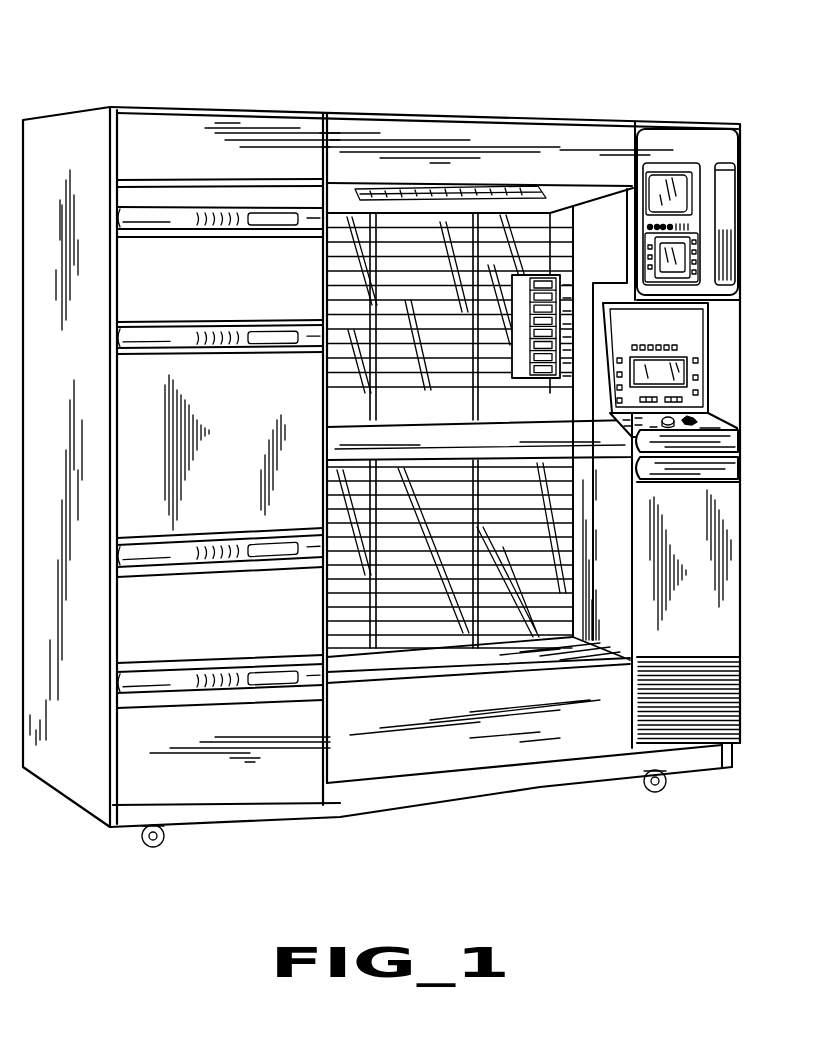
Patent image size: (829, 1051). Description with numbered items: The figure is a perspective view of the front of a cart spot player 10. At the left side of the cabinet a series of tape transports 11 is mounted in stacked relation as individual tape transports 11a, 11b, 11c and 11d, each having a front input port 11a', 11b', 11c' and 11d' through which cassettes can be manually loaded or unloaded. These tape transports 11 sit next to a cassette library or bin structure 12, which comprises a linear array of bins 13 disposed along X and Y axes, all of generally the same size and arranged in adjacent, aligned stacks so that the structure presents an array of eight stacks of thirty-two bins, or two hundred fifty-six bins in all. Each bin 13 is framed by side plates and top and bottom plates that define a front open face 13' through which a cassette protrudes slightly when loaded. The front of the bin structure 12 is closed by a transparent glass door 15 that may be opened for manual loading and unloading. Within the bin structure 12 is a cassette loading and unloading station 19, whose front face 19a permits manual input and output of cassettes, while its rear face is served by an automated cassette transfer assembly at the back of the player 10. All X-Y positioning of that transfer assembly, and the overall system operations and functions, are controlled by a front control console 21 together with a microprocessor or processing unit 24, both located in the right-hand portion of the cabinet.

The cart spot player 10 is at (212, 66).
The tape transports 11 is at (125, 375).
The tape transport 11a is at (220, 273).
The front input port 11a' is at (221, 237).
The tape transport 11b is at (225, 452).
The front input port 11b' is at (222, 354).
The tape transport 11c is at (229, 633).
The front input port 11c' is at (222, 568).
The tape transport 11d is at (240, 764).
The front input port 11d' is at (223, 691).
The bin structure 12 is at (523, 247).
The bins 13 is at (426, 316).
The front open face 13' is at (456, 525).
The transparent glass door 15 is at (417, 615).
The cassette loading and unloading station 19 is at (575, 277).
The front face 19a is at (527, 385).
The front control console 21 is at (708, 420).
The processing unit 24 is at (655, 603).